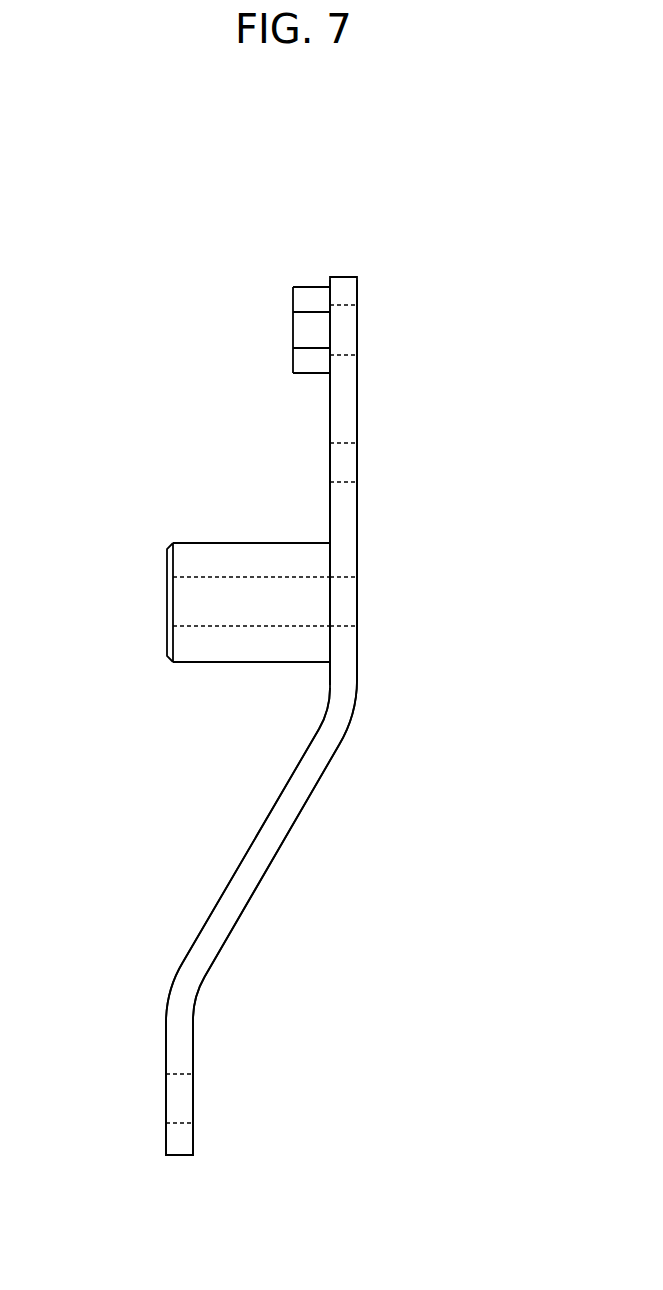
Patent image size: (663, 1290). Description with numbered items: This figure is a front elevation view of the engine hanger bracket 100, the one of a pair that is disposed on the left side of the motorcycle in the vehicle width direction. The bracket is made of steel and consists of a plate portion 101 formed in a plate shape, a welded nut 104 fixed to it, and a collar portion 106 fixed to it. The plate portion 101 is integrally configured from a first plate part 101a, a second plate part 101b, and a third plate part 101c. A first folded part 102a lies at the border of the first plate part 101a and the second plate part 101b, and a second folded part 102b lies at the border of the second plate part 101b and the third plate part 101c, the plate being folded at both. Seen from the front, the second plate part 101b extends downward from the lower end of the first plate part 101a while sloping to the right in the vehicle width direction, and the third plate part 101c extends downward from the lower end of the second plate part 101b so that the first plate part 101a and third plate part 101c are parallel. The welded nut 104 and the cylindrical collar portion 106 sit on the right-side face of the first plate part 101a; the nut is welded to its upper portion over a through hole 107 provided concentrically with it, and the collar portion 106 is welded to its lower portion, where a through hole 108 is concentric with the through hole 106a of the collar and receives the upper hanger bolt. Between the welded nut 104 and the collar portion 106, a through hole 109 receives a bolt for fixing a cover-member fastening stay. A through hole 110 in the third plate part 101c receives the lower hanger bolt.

The engine hanger bracket 100 is at (359, 226).
The plate portion 101 is at (345, 403).
The first plate part 101a is at (345, 525).
The second plate part 101b is at (253, 873).
The third plate part 101c is at (177, 1055).
The first folded part 102a is at (345, 705).
The second folded part 102b is at (175, 1010).
The welded nut 104 is at (305, 330).
The collar portion 106 is at (247, 557).
The through hole of the collar portion 106a is at (193, 603).
The through hole 107 is at (345, 331).
The through hole 108 is at (345, 600).
The through hole 109 is at (345, 463).
The through hole 110 is at (180, 1102).